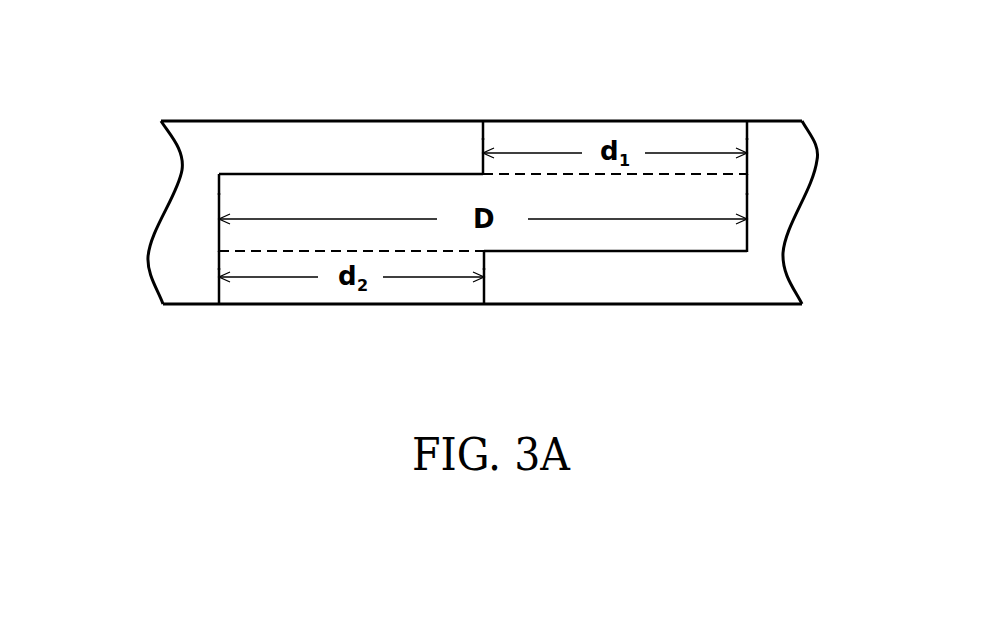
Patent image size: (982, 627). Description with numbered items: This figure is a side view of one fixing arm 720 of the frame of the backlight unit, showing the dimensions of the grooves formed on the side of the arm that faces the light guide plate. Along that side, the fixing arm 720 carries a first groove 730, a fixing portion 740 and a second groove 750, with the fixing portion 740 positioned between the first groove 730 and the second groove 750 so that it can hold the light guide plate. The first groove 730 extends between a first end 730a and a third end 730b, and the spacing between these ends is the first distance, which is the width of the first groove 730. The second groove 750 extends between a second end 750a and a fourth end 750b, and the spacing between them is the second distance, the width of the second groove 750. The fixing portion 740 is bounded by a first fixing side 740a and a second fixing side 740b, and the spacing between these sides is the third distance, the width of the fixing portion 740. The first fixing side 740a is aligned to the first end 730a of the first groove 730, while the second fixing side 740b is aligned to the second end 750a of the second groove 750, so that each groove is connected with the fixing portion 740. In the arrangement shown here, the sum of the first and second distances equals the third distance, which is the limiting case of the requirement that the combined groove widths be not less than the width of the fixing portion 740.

The fixing arm 720 is at (168, 208).
The first groove 730 is at (638, 130).
The first end 730a is at (744, 150).
The third end 730b is at (485, 142).
The fixing portion 740 is at (343, 192).
The first fixing side 740a is at (745, 187).
The second fixing side 740b is at (222, 190).
The second groove 750 is at (313, 292).
The second end 750a is at (220, 295).
The fourth end 750b is at (482, 293).